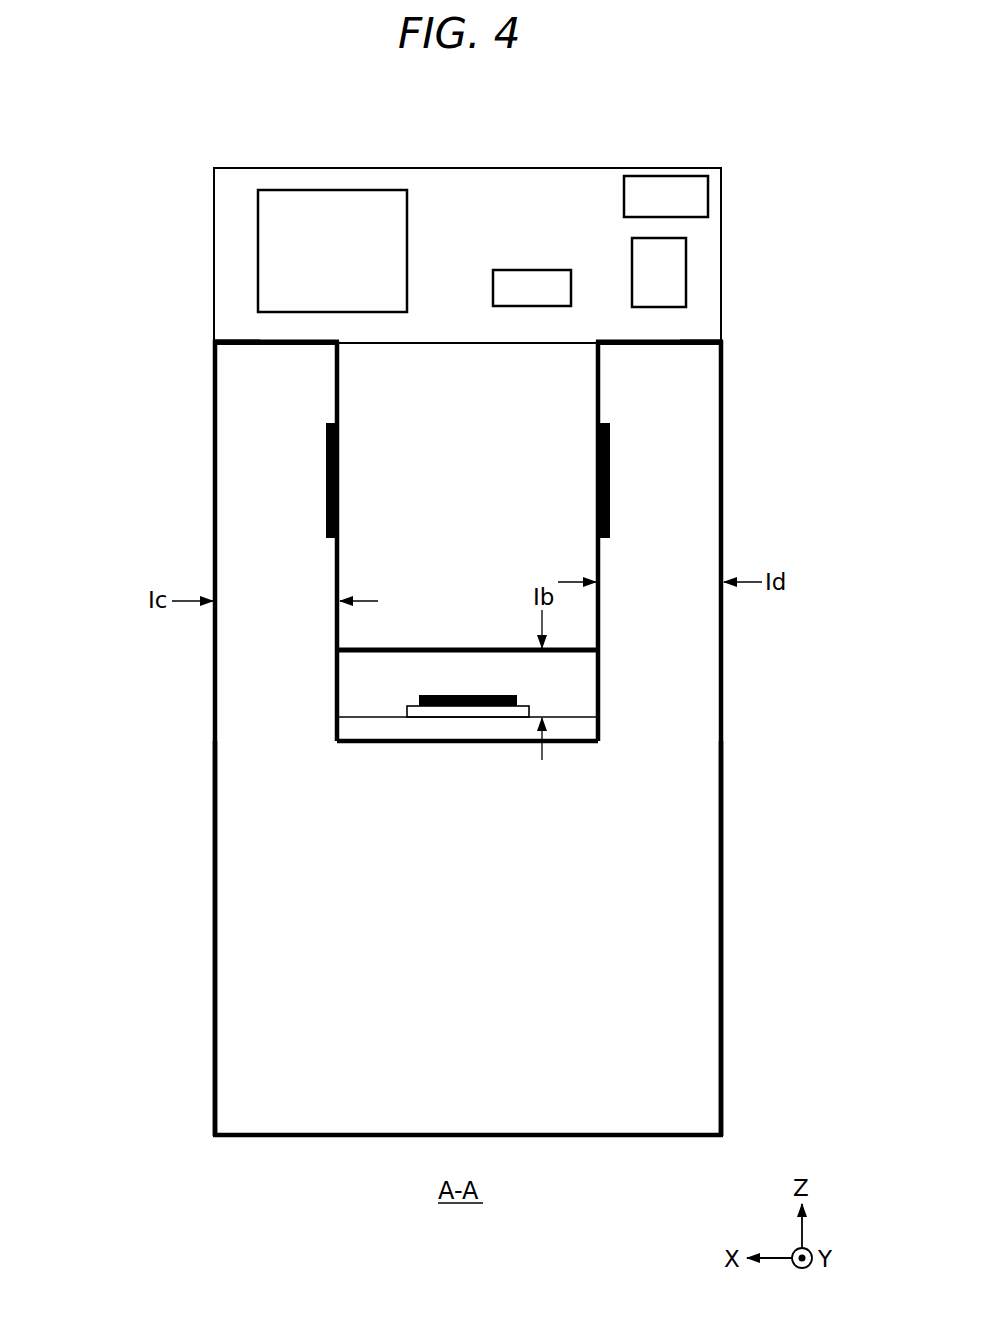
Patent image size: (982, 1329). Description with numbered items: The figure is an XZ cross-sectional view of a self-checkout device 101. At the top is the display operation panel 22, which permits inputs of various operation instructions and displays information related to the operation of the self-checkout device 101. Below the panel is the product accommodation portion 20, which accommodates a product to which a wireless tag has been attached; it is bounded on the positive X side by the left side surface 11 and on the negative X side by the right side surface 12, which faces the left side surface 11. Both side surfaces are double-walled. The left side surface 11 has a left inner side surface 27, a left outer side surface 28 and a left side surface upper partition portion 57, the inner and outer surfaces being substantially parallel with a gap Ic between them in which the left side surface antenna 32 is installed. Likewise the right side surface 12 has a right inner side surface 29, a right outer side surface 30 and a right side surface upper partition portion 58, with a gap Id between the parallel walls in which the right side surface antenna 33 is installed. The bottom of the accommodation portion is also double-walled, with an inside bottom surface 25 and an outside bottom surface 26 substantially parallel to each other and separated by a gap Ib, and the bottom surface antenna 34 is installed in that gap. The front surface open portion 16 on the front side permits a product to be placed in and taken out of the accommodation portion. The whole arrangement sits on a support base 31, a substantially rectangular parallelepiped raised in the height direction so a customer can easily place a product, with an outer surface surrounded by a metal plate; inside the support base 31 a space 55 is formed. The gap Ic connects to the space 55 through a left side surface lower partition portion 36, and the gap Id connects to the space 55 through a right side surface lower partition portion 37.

The self-checkout device 101 is at (678, 143).
The display operation panel 22 is at (721, 200).
The left side surface 11 is at (127, 355).
The left inner side surface 27 is at (335, 365).
The left outer side surface 28 is at (213, 412).
The right side surface 12 is at (797, 352).
The right inner side surface 29 is at (600, 365).
The right outer side surface 30 is at (724, 410).
The product accommodation portion 20 is at (443, 456).
The left side surface antenna 32 is at (326, 505).
The right side surface antenna 33 is at (610, 489).
The front surface open portion 16 is at (786, 655).
The inside bottom surface 25 is at (580, 652).
The outside bottom surface 26 is at (570, 717).
The bottom surface antenna 34 is at (440, 696).
The left side surface upper partition portion 57 is at (250, 337).
The right side surface upper partition portion 58 is at (690, 336).
The left side surface lower partition portion 36 is at (278, 748).
The right side surface lower partition portion 37 is at (662, 745).
The support base 31 is at (214, 950).
The space 55 is at (590, 930).